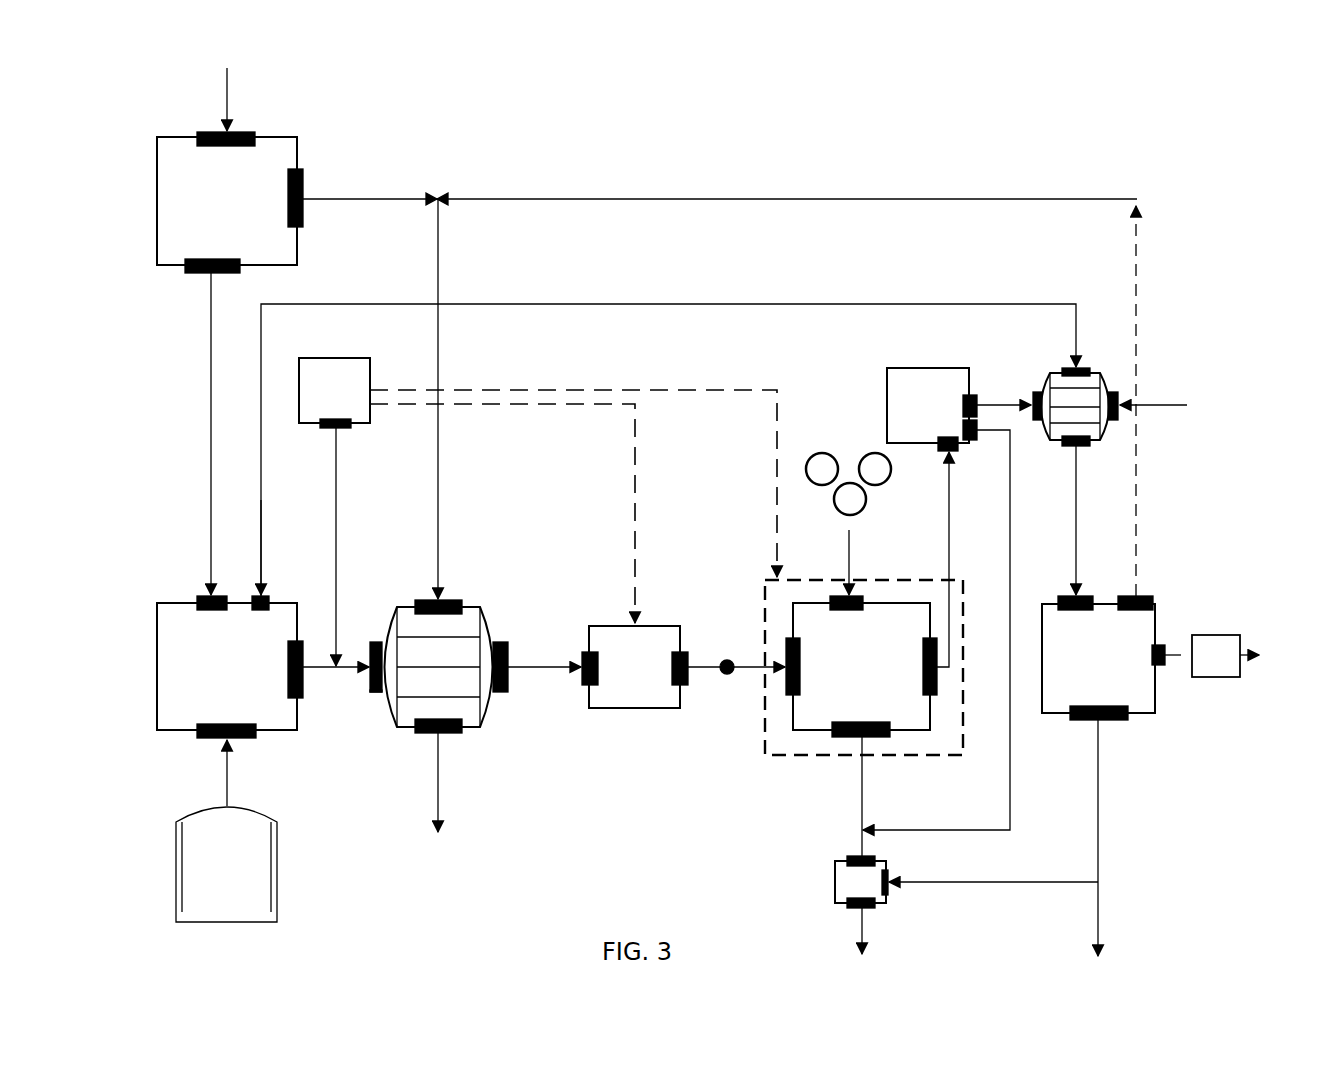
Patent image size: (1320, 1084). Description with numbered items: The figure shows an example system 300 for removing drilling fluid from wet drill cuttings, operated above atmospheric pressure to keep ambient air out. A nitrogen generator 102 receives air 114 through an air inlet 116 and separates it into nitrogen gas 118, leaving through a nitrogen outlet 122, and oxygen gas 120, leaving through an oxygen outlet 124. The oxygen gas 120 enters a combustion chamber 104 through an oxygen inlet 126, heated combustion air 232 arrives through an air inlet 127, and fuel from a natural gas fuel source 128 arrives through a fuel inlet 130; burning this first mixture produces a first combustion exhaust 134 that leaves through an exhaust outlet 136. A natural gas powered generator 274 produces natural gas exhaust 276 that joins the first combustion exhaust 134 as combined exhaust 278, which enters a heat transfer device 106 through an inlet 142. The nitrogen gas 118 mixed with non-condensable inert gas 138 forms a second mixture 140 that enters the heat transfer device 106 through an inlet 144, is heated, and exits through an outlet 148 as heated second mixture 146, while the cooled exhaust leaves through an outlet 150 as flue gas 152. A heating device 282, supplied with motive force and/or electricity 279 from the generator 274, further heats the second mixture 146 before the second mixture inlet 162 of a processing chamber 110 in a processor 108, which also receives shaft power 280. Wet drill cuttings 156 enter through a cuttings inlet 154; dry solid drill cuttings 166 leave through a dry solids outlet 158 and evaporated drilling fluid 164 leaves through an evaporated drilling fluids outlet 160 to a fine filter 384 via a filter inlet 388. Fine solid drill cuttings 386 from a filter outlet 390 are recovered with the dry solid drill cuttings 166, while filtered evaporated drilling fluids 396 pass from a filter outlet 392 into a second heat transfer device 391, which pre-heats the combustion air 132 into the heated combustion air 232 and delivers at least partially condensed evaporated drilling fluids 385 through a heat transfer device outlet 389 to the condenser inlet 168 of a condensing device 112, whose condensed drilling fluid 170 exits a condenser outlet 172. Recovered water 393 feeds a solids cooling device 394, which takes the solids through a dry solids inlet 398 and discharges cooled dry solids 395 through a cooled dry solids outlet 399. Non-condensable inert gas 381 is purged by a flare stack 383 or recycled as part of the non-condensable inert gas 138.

The system for removing drilling fluid from wet drill cuttings 300 is at (1012, 145).
The nitrogen generator 102 is at (227, 201).
The air 114 is at (226, 95).
The air inlet 116 is at (245, 132).
The nitrogen gas 118 is at (330, 199).
The oxygen gas 120 is at (211, 466).
The nitrogen outlet 122 is at (303, 173).
The oxygen outlet 124 is at (203, 274).
The oxygen inlet 126 is at (200, 596).
The air inlet 127 is at (259, 590).
The natural gas fuel source 128 is at (226, 831).
The fuel inlet 130 is at (203, 739).
The combustion air 132 is at (1163, 405).
The first combustion exhaust 134 is at (318, 670).
The exhaust outlet 136 is at (300, 640).
The non-condensable inert gas 138 is at (592, 199).
The second mixture 140 is at (439, 272).
The inlet 142 is at (374, 698).
The inlet 144 is at (460, 600).
The heated second mixture 146 is at (532, 672).
The outlet 148 is at (503, 640).
The outlet 150 is at (435, 735).
The flue gas 152 is at (440, 790).
The cuttings inlet 154 is at (838, 592).
The wet drill cuttings 156 is at (847, 440).
The dry solids outlet 158 is at (848, 738).
The evaporated drilling fluids outlet 160 is at (935, 697).
The second mixture inlet 162 is at (792, 697).
The evaporated drilling fluid 164 is at (948, 562).
The dry solid drill cuttings 166 is at (862, 777).
The condenser inlet 168 is at (1067, 594).
The condensed drilling fluid 170 is at (1098, 832).
The condenser outlet 172 is at (1103, 722).
The combustion chamber 104 is at (227, 666).
The heat transfer device 106 is at (439, 667).
The processor 108 is at (762, 575).
The processing chamber 110 is at (861, 666).
The condensing device 112 is at (1111, 658).
The heated combustion air 232 is at (680, 304).
The natural gas powered generator 274 is at (334, 393).
The natural gas exhaust 276 is at (340, 500).
The combined exhaust 278 is at (376, 640).
The motive force and/or electricity 279 is at (486, 405).
The shaft power 280 is at (518, 390).
The heating device 282 is at (683, 667).
The non-condensable inert gas 381 is at (1181, 655).
The flare stack 383 is at (1225, 656).
The fine filter 384 is at (928, 405).
The at least partially condensed evaporated drilling fluids 385 is at (1077, 572).
The fine solid drill cuttings 386 is at (1010, 820).
The filter inlet 388 is at (942, 451).
The heat transfer device outlet 389 is at (1083, 447).
The filter outlet 390 is at (977, 441).
The second heat transfer device 391 is at (1090, 362).
The filter outlet 392 is at (977, 394).
The water 393 is at (968, 884).
The solids cooling device 394 is at (861, 882).
The cooled dry solids 395 is at (864, 909).
The filtered evaporated drilling fluids 396 is at (1008, 407).
The dry solids inlet 398 is at (852, 858).
The cooled dry solids outlet 399 is at (856, 909).